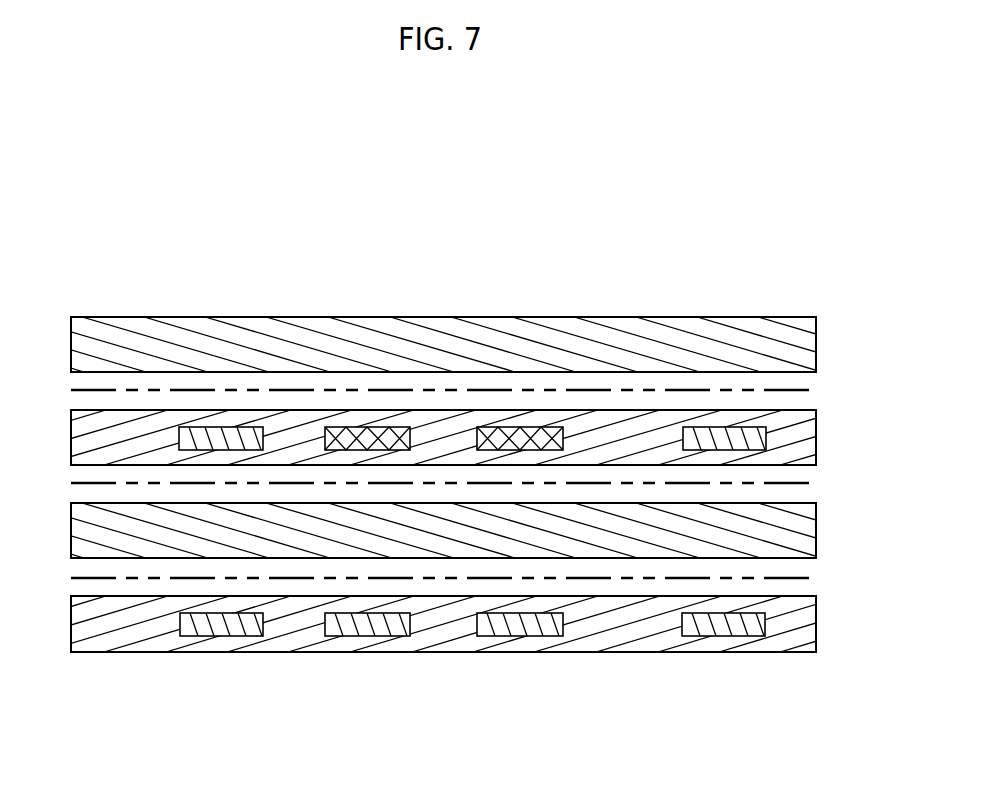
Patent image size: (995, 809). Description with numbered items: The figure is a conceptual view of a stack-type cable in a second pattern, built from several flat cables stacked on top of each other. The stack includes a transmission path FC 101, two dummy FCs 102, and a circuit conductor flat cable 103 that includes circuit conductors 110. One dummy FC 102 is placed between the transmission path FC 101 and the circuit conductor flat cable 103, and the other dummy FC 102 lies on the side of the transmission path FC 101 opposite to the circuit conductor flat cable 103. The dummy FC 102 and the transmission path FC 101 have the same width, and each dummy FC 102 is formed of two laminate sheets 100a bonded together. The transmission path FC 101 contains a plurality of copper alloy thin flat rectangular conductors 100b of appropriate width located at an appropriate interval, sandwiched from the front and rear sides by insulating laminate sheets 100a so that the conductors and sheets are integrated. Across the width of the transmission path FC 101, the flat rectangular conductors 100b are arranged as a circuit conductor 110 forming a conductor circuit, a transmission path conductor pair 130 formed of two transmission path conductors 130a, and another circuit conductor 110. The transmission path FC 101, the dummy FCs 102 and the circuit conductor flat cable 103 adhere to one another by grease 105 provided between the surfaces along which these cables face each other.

The insulating laminate sheet 100a is at (497, 542).
The flat rectangular conductor 100b is at (474, 690).
The transmission path FC 101 is at (816, 443).
The dummy FC 102 is at (816, 353).
The circuit conductor flat cable 103 is at (497, 681).
The grease 105 is at (793, 391).
The circuit conductor 110 is at (220, 637).
The transmission path conductor pair 130 is at (453, 690).
The transmission path conductor 130a is at (449, 663).